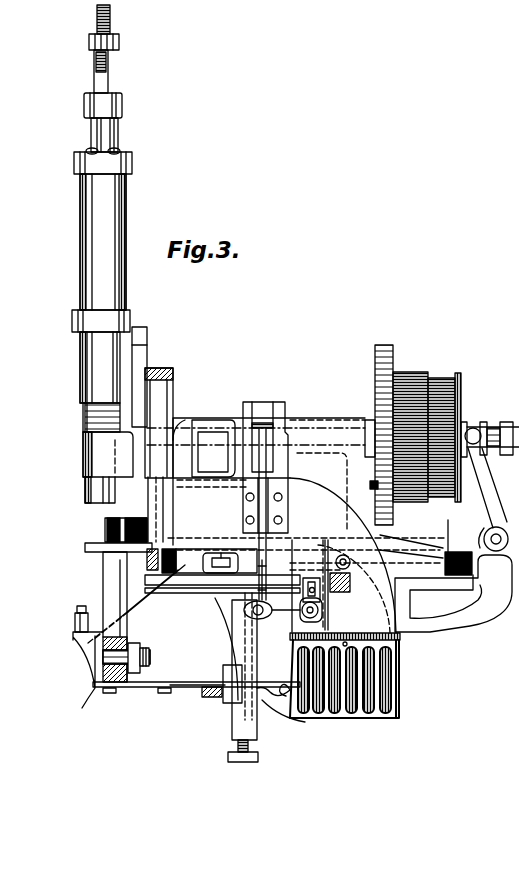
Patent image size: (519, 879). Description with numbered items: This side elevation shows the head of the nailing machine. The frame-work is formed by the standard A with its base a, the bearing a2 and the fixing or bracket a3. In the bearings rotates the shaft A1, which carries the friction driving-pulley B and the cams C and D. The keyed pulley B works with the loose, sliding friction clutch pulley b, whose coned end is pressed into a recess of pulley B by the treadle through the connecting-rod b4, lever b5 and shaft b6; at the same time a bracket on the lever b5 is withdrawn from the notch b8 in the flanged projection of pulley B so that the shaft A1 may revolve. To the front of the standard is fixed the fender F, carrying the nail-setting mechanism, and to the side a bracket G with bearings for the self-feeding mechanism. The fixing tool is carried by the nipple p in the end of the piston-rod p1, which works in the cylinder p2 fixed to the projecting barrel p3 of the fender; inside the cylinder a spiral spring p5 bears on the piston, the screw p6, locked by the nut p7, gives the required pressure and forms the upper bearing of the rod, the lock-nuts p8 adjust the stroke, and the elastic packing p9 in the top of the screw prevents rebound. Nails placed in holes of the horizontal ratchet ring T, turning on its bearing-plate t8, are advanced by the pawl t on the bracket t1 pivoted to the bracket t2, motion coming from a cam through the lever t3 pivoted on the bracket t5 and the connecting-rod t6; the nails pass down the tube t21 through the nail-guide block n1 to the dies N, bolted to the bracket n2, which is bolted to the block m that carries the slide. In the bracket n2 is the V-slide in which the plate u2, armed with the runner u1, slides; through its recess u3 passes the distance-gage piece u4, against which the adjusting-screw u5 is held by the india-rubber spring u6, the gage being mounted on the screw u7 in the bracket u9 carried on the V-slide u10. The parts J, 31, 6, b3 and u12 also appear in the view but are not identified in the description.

The nipple p is at (126, 204).
The piston-rod p1 is at (109, 80).
The cylinder p2 is at (80, 242).
The projecting barrel p3 is at (80, 357).
The spiral spring p5 is at (88, 40).
The screw p6 is at (118, 130).
The nut p7 is at (120, 154).
The lock-nuts p8 is at (120, 50).
The india-rubber or elastic packing p9 is at (123, 104).
The fender or bracket F is at (108, 467).
The cam D is at (149, 377).
The bracket G is at (159, 455).
The cam or arm C is at (213, 448).
The standard A is at (413, 670).
The shaft A1 is at (250, 428).
The base a is at (4, 361).
The part J is at (10, 389).
The bearing a2 is at (325, 420).
The fixing or bracket a3 is at (453, 593).
The pawl t is at (306, 585).
The bracket t1 is at (330, 596).
The bracket t2 is at (325, 614).
The lever t3 is at (263, 404).
The bracket t5 is at (285, 409).
The connecting-rod t6 is at (270, 548).
The bearing-plate t8 is at (482, 597).
The tube t21 is at (145, 600).
The horizontal ring T is at (169, 547).
The friction driving-pulley B is at (400, 372).
The friction clutch pulley b is at (440, 372).
The link b3 is at (489, 480).
The connecting-rod b4 is at (420, 628).
The lever b5 is at (422, 538).
The shaft b6 is at (393, 528).
The notch b8 is at (370, 486).
The block m is at (105, 530).
The nail-guide block n1 is at (78, 640).
The fixing or bracket n2 is at (118, 612).
The dies N is at (93, 690).
The pivot bolt 31 is at (132, 648).
The nut 6 is at (150, 663).
The runner u1 is at (110, 693).
The plate u2 is at (190, 683).
The recess u3 is at (265, 692).
The distance-gage piece u4 is at (248, 672).
The adjusting-screw u5 is at (210, 697).
The india-rubber spring u6 is at (305, 722).
The screw u7 is at (258, 757).
The bracket u9 is at (268, 725).
The V-slide u10 is at (175, 600).
The pivot u12 is at (262, 624).